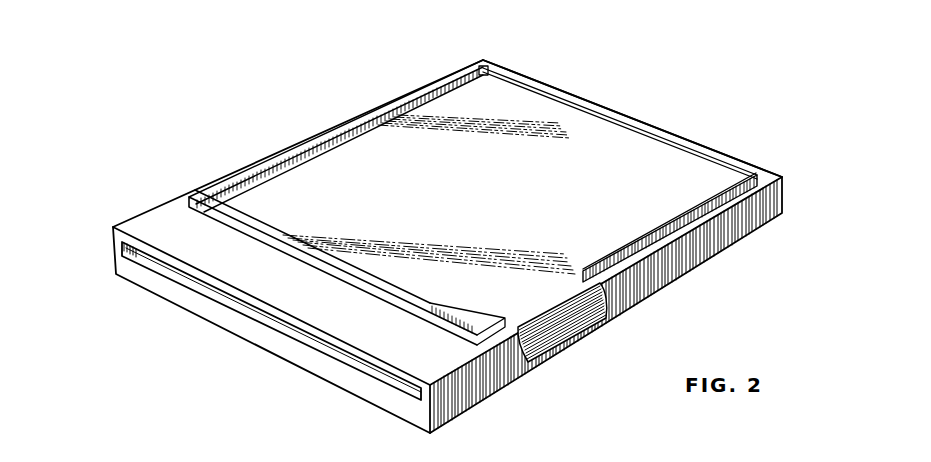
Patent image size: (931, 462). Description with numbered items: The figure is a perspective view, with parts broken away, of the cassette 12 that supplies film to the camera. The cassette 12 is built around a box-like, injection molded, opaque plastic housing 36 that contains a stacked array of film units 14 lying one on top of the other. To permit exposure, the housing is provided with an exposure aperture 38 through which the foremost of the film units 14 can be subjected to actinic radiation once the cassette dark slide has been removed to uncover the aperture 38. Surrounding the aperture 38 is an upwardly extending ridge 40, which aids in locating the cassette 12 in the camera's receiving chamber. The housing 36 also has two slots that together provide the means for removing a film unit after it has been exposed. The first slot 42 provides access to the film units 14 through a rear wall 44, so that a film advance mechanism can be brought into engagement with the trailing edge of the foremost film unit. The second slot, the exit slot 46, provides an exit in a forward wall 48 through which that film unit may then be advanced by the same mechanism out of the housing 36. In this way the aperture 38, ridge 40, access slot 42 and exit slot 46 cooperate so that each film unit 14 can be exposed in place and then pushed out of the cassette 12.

The cassette 12 is at (684, 136).
The film units 14 is at (555, 328).
The housing 36 is at (753, 160).
The exposure aperture 38 is at (545, 104).
The ridge 40 is at (614, 126).
The slot 42 is at (488, 66).
The rear wall 44 is at (783, 190).
The exit slot 46 is at (137, 262).
The forward wall 48 is at (362, 378).